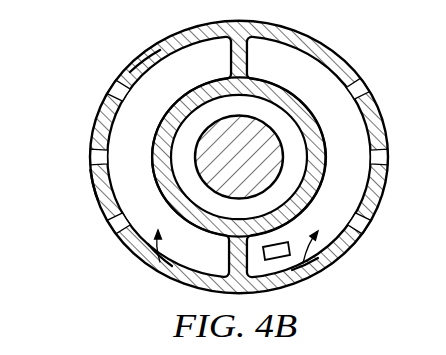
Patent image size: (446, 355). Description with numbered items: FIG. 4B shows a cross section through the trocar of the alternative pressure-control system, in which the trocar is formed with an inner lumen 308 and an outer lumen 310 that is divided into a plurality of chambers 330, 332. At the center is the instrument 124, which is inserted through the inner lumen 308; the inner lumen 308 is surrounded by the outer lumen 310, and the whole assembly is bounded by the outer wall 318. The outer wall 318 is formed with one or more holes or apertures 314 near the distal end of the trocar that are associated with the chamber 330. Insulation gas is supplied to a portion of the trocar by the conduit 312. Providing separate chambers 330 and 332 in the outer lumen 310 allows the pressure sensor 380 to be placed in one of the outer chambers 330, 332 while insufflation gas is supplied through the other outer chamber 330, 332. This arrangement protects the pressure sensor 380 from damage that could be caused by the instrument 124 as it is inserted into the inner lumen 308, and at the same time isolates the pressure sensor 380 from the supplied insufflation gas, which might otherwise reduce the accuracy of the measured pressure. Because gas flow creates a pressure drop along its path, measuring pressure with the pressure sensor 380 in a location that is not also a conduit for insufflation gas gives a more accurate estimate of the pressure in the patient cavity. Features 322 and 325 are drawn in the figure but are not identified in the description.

The instrument 124 is at (223, 169).
The inner lumen 308 is at (252, 104).
The outer lumen 310 is at (213, 58).
The conduit 312 is at (101, 108).
The holes or apertures 314 is at (115, 86).
The outer wall 318 is at (94, 191).
The inner wall 322 is at (348, 183).
The outer wall portion 325 is at (148, 58).
The chamber 330 is at (158, 266).
The chamber 332 is at (318, 268).
The pressure sensor 380 is at (282, 259).